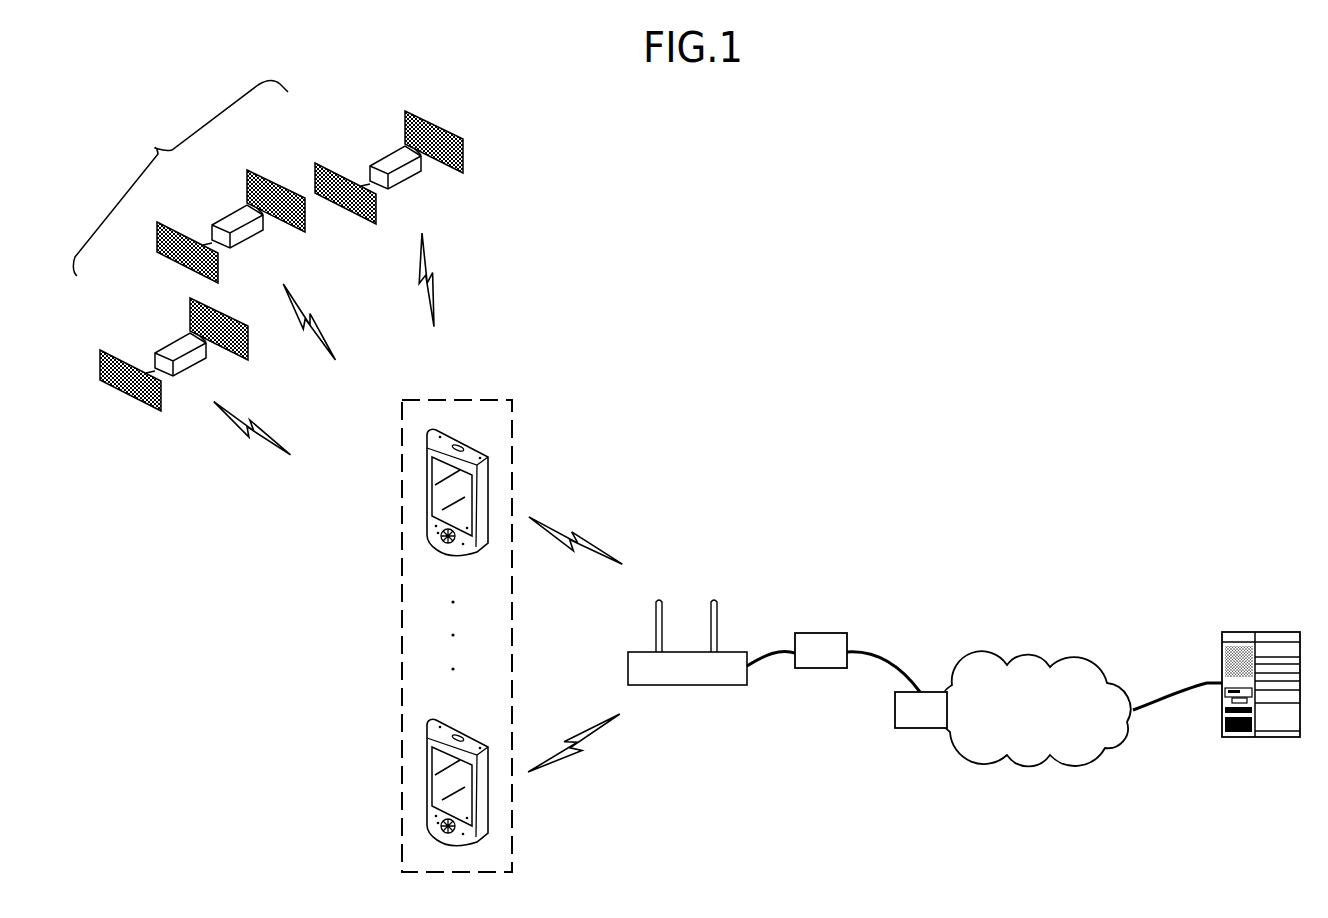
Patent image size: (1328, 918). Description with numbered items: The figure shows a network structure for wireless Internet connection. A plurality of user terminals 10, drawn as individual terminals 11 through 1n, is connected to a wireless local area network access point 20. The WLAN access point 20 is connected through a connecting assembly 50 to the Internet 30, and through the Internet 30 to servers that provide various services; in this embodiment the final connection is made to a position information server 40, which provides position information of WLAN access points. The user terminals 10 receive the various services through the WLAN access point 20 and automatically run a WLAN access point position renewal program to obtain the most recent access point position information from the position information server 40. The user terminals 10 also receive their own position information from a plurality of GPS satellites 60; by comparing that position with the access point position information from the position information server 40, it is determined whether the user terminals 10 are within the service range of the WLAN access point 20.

The GPS satellites 60 is at (268, 245).
The user terminals 10 is at (432, 614).
The first mobile terminal 11 is at (427, 483).
The n-th mobile terminal 1n is at (427, 773).
The WLAN access point 20 is at (733, 652).
The connecting assembly 50 is at (927, 692).
The Internet 30 is at (1029, 653).
The position information server 40 is at (1262, 632).